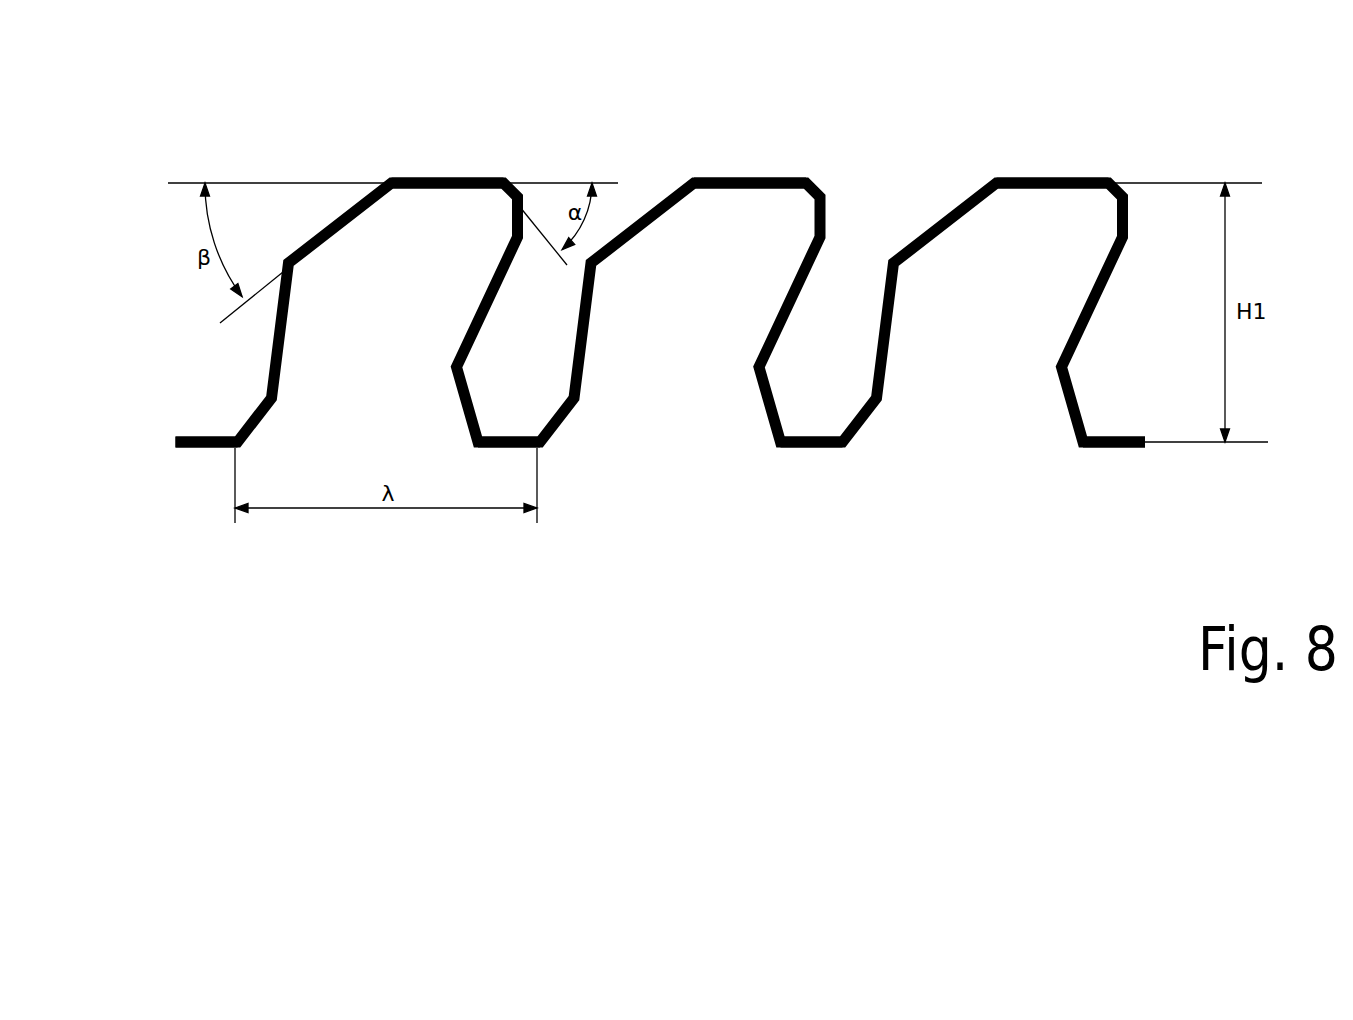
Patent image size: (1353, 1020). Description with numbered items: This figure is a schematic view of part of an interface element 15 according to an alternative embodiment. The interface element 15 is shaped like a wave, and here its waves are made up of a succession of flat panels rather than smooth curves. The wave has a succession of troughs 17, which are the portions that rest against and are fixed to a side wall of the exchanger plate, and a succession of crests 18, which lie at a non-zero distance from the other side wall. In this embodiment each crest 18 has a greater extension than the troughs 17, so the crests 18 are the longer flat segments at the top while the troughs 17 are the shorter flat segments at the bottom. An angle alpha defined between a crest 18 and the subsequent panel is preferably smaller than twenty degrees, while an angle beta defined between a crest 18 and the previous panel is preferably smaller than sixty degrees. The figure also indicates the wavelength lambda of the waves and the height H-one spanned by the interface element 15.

The interface element 15 is at (292, 612).
The trough 17 is at (190, 437).
The crest 18 is at (435, 179).